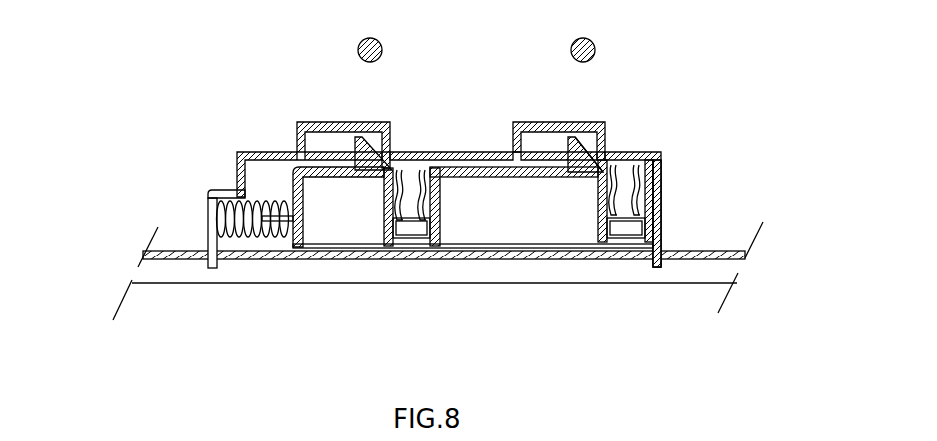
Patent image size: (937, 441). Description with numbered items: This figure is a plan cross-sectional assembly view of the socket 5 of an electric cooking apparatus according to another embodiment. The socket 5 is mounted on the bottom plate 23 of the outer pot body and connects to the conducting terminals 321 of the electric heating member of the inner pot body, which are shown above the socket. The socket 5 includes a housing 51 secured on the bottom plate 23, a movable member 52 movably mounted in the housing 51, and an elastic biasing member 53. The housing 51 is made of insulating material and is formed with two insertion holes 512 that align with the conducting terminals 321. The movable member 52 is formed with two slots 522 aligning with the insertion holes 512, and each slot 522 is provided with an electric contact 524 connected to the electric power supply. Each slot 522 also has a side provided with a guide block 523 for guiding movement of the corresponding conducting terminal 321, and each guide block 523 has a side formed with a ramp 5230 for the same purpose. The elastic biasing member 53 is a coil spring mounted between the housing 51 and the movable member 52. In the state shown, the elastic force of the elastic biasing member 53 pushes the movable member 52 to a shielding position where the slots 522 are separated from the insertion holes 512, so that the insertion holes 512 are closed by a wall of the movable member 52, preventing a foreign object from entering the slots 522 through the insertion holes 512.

The socket 5 is at (505, 180).
The bottom plate 23 is at (178, 252).
The housing 51 is at (248, 153).
The insertion holes 512 is at (371, 124).
The movable member 52 is at (495, 208).
The slots 522 is at (642, 175).
The guide block 523 is at (572, 137).
The ramp 5230 is at (590, 142).
The electric contact 524 is at (423, 220).
The elastic biasing member 53 is at (237, 237).
The conducting terminals 321 is at (358, 47).